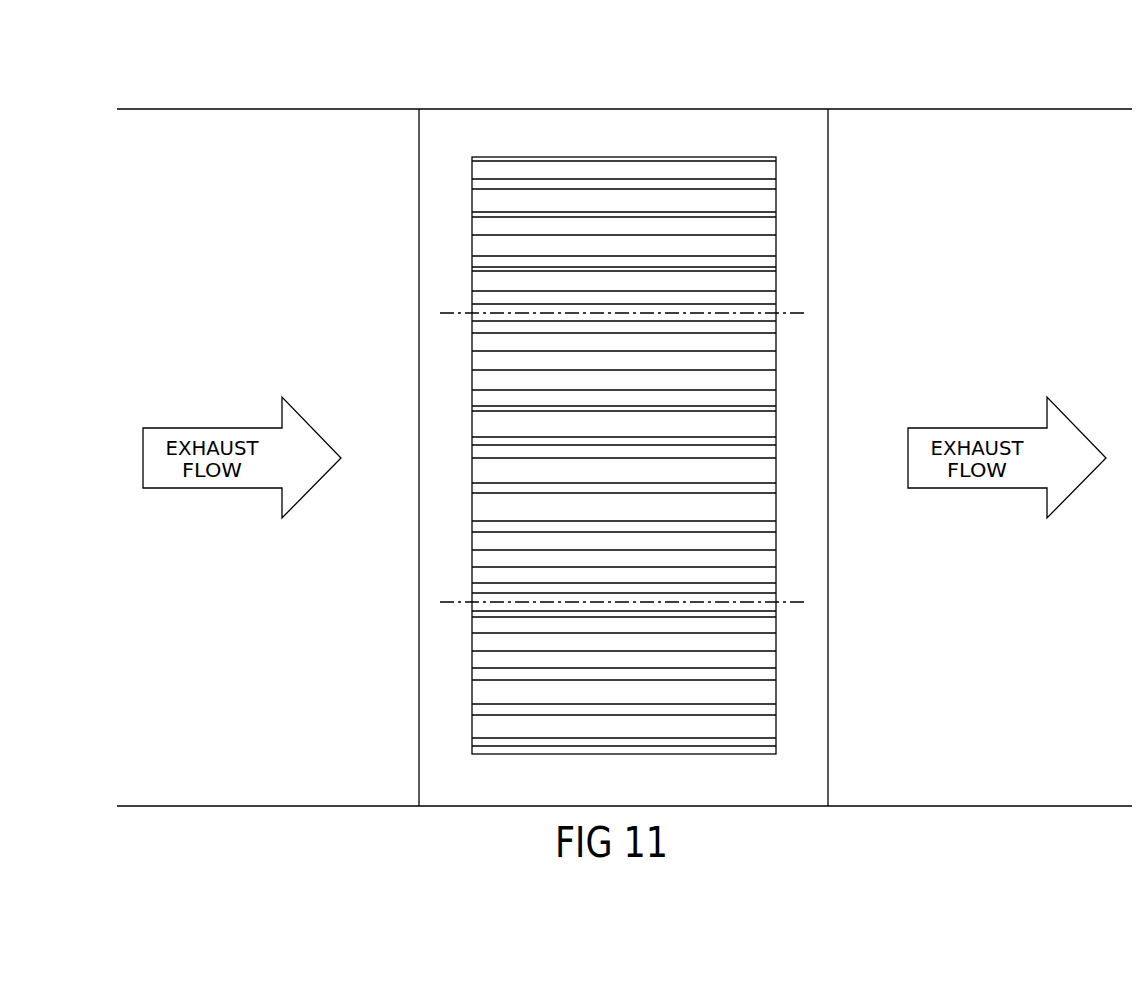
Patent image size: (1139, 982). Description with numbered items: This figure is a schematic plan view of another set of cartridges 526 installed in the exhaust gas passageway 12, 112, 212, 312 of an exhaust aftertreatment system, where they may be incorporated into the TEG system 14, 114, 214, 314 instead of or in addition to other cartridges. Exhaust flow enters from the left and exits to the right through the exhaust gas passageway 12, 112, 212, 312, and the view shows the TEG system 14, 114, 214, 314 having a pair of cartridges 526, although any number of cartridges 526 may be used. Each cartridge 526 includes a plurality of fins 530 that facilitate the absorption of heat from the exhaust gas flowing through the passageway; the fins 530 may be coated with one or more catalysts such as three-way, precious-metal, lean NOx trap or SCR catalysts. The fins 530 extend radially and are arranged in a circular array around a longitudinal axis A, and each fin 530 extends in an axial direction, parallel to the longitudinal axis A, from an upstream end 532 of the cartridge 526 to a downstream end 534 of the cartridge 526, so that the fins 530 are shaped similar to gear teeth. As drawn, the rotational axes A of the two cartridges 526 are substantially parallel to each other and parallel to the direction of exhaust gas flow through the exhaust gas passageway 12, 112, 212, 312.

The exhaust gas passageway 12 is at (268, 428).
The exhaust gas passageway 112 is at (268, 428).
The exhaust gas passageway 212 is at (268, 428).
The exhaust gas passageway 312 is at (304, 118).
The TEG system 14 is at (679, 422).
The TEG system 114 is at (679, 422).
The TEG system 214 is at (679, 422).
The TEG system 314 is at (781, 109).
The cartridge 526 is at (778, 225).
The fins 530 is at (758, 228).
The upstream end 532 is at (472, 203).
The downstream end 534 is at (776, 172).
The longitudinal axis A is at (805, 313).